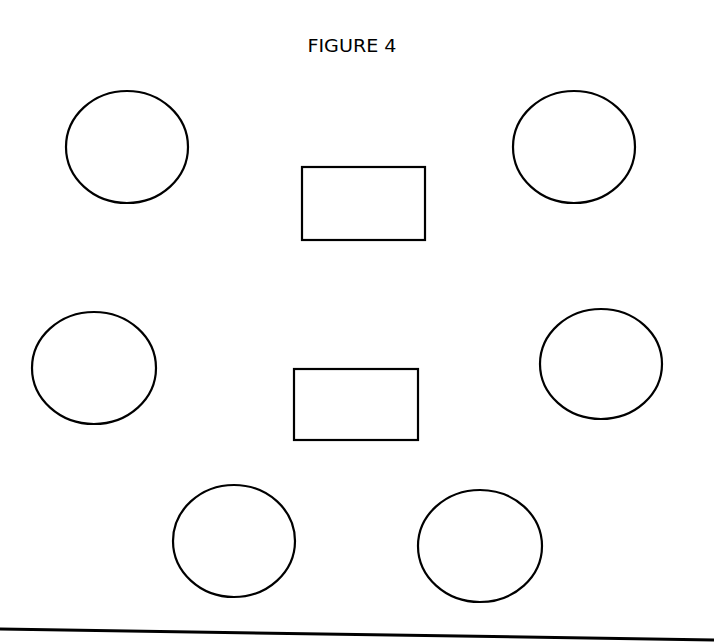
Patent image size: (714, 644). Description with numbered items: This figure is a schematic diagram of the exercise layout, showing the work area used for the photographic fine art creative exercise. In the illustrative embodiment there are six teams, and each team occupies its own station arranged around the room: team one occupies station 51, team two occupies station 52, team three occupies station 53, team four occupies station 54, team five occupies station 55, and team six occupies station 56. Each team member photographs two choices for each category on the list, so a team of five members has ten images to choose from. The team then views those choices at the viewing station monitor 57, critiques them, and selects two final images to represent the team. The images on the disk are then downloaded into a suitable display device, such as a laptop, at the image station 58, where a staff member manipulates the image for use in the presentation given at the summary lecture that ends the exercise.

The station 51 is at (549, 157).
The station 52 is at (587, 378).
The station 53 is at (465, 554).
The station 54 is at (215, 553).
The station 55 is at (72, 378).
The station 56 is at (126, 152).
The viewing station monitor 57 is at (342, 410).
The image station 58 is at (345, 209).